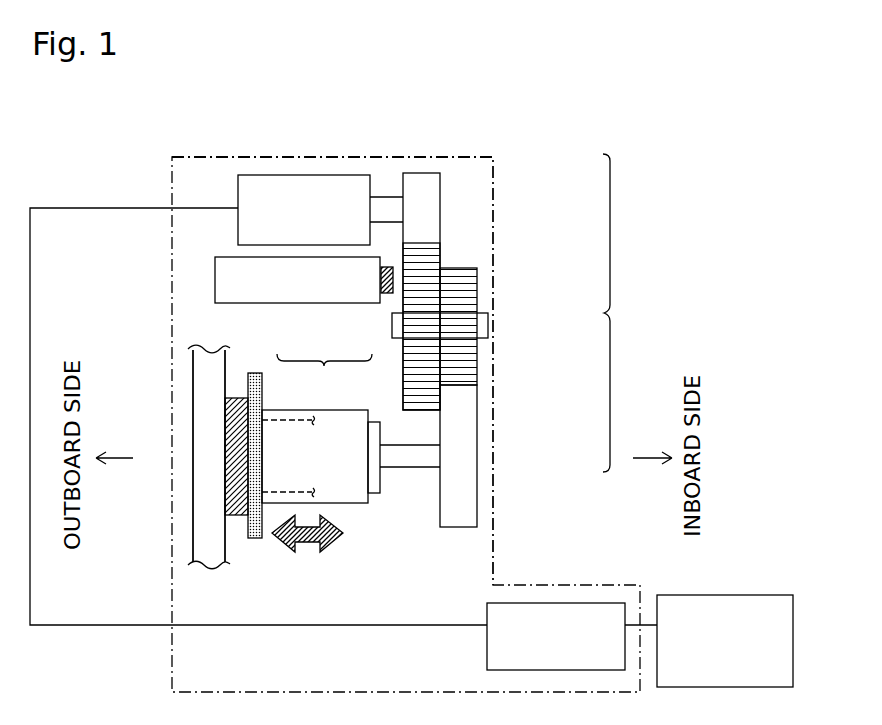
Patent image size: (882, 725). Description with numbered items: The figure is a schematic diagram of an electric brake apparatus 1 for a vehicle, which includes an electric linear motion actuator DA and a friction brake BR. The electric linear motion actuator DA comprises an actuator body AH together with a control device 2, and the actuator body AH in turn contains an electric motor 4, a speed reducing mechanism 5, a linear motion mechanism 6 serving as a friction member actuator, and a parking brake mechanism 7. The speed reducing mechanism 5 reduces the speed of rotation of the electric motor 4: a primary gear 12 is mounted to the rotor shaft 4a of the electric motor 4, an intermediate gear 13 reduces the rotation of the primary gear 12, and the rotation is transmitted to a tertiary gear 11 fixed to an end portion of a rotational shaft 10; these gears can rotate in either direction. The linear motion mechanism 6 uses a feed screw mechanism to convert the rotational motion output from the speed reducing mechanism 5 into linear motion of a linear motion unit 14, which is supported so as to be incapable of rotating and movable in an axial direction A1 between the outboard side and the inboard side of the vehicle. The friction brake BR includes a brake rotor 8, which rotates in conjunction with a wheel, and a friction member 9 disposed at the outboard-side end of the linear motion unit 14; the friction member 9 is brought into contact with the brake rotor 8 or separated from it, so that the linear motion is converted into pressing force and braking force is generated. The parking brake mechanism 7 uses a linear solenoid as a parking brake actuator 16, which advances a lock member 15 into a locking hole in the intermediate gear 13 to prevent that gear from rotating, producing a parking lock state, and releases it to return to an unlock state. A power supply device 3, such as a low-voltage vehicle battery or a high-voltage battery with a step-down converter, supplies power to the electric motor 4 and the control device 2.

The electric brake apparatus 1 is at (172, 189).
The electric linear motion actuator DA is at (220, 158).
The actuator body AH is at (352, 158).
The electric motor 4 is at (297, 175).
The rotor shaft 4a is at (387, 201).
The parking brake actuator 16 is at (297, 305).
The lock member 15 is at (382, 296).
The parking brake mechanism 7 is at (324, 374).
The primary gear 12 is at (430, 182).
The intermediate gear 13 is at (484, 370).
The tertiary gear 11 is at (470, 448).
The rotational shaft 10 is at (413, 460).
The speed reducing mechanism 5 is at (619, 313).
The linear motion mechanism 6 is at (357, 497).
The linear motion unit 14 is at (246, 415).
The friction member 9 is at (235, 515).
The brake rotor 8 is at (204, 369).
The friction brake BR is at (193, 551).
The axial direction A1 is at (345, 533).
The control device 2 is at (570, 603).
The power supply device 3 is at (727, 595).